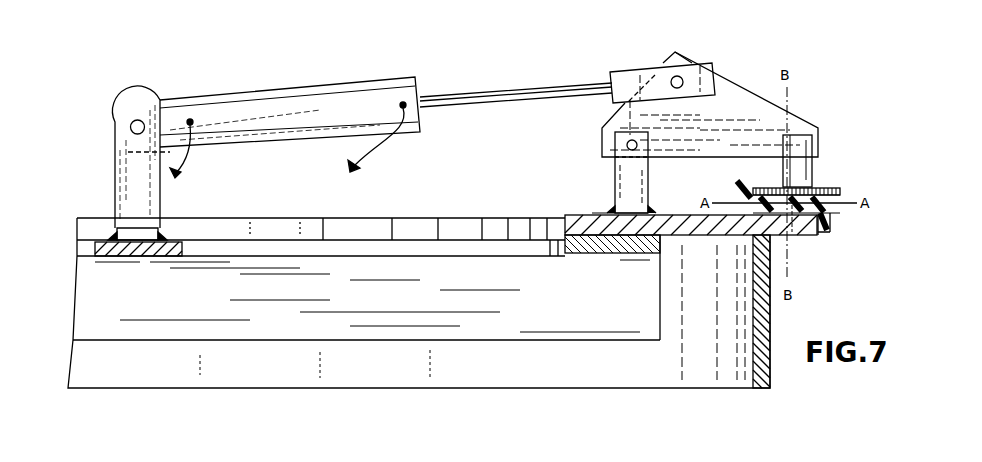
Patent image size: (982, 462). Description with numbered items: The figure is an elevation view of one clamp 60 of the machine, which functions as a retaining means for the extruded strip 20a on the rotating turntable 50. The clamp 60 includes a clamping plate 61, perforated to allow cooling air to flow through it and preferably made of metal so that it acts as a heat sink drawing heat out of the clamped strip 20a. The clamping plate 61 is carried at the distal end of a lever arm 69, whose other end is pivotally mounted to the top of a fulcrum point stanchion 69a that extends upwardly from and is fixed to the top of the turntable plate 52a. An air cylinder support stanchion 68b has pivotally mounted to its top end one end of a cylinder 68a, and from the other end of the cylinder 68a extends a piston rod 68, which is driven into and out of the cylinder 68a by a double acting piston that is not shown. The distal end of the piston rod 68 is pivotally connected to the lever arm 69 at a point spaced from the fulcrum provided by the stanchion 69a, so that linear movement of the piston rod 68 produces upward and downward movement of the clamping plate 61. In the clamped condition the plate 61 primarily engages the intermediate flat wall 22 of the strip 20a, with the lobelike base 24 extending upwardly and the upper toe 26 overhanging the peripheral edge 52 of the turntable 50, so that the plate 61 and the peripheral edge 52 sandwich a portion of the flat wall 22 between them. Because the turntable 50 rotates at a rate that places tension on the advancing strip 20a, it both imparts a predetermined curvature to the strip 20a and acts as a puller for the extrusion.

The strip 20a is at (852, 211).
The intermediate flat wall 22 is at (792, 207).
The lobelike base 24 is at (742, 183).
The upper toe 26 is at (822, 228).
The turntable 50 is at (545, 198).
The peripheral edge 52 is at (810, 233).
The turntable plate 52a is at (592, 213).
The clamp 60 is at (386, 62).
The clamping plate 61 is at (825, 187).
The piston rod 68 is at (538, 90).
The cylinder 68a is at (264, 100).
The air cylinder support stanchion 68b is at (115, 180).
The lever arm 69 is at (732, 97).
The fulcrum point stanchion 69a is at (612, 175).